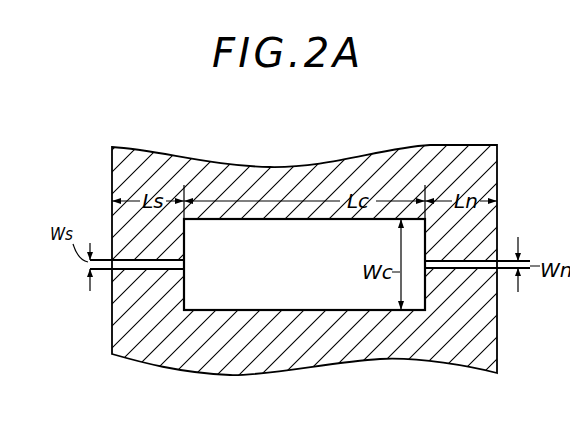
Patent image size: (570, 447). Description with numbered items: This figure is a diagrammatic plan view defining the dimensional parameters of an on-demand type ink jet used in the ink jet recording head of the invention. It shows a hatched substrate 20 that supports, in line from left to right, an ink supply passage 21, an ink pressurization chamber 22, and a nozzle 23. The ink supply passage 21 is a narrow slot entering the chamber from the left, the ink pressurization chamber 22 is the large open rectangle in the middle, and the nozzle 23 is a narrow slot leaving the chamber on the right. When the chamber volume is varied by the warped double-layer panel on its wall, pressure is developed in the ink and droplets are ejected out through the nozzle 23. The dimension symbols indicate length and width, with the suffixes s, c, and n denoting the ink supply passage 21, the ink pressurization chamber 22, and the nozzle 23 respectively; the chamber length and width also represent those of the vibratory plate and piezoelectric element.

The substrate 20 is at (477, 358).
The ink supply passage 21 is at (168, 256).
The ink pressurization chamber 22 is at (312, 302).
The nozzle 23 is at (474, 254).